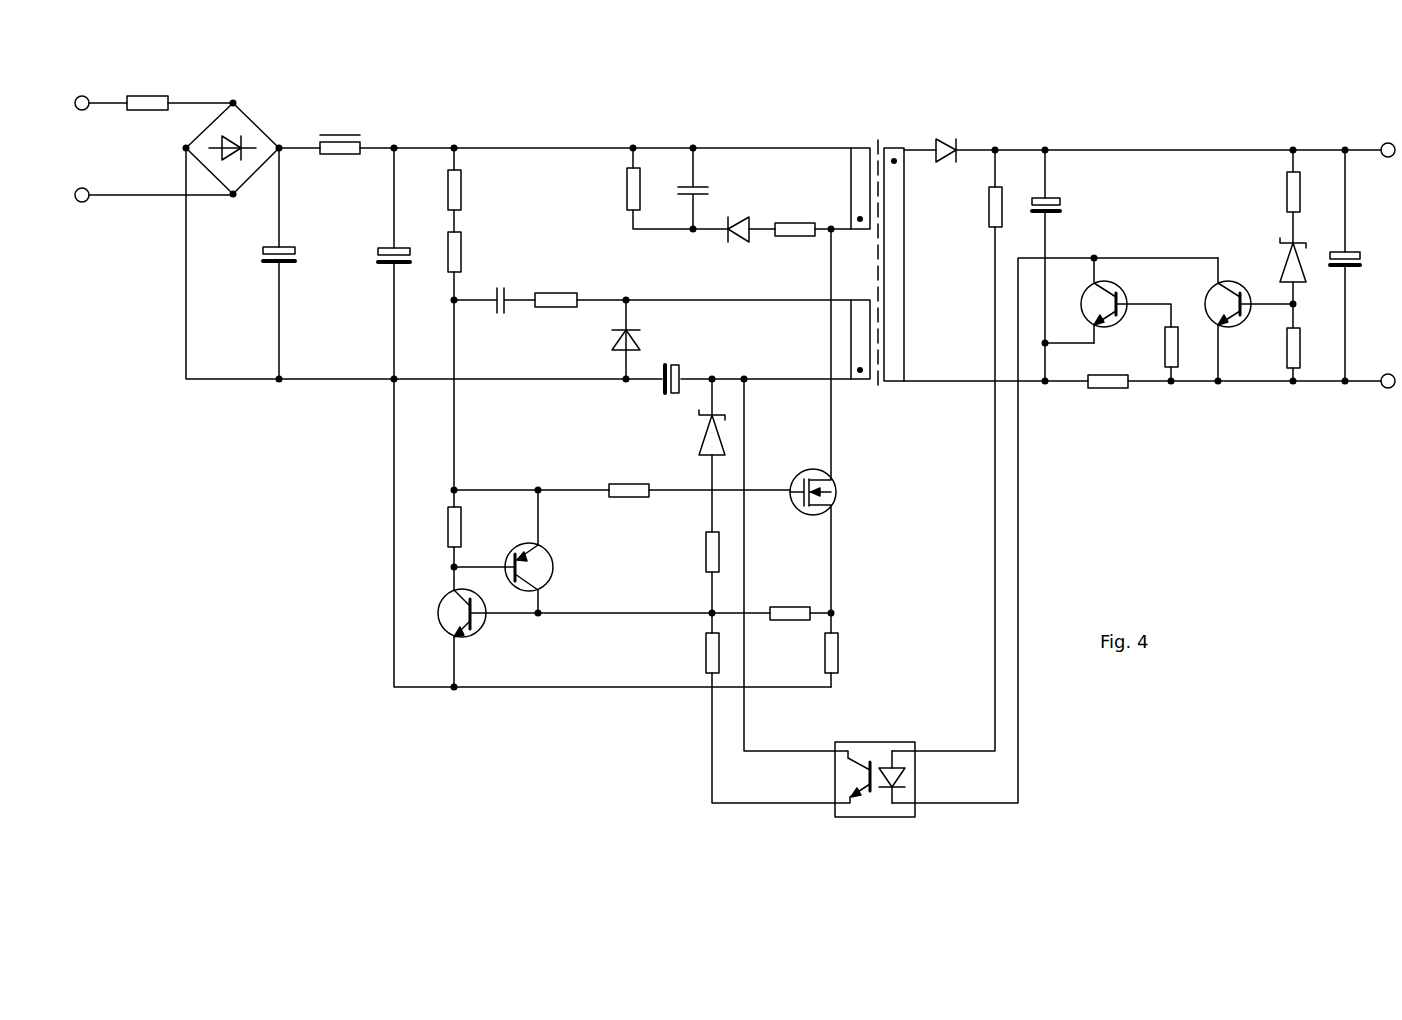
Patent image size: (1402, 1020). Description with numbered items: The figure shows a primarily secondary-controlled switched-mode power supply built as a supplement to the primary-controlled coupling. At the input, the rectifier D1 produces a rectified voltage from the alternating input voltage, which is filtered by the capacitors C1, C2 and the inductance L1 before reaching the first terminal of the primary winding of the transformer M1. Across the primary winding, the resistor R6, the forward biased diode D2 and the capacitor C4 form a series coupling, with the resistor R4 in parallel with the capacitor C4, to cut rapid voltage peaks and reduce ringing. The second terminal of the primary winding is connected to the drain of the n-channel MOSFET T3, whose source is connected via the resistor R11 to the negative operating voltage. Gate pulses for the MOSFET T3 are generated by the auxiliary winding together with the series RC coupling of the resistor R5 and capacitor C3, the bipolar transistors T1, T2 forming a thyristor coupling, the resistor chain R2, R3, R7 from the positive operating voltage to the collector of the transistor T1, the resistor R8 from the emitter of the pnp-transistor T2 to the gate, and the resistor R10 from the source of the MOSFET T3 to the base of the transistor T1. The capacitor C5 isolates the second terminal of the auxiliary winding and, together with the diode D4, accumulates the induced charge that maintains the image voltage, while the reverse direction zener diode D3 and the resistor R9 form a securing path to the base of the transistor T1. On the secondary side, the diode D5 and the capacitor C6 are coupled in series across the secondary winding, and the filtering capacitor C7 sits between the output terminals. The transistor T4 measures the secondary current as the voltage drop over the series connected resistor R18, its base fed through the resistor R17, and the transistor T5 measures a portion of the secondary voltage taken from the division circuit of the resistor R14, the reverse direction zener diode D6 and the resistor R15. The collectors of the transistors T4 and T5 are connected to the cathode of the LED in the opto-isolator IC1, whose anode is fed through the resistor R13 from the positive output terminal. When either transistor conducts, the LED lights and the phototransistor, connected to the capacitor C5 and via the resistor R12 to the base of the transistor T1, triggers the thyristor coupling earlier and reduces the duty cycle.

The rectifier D1 is at (236, 149).
The inductance L1 is at (340, 132).
The capacitor C1 is at (271, 263).
The capacitor C2 is at (386, 263).
The resistor R2 is at (469, 190).
The resistor R3 is at (469, 252).
The capacitor C3 is at (494, 313).
The resistor R5 is at (693, 312).
The diode D4 is at (610, 339).
The capacitor C5 is at (672, 365).
The resistor R4 is at (644, 188).
The capacitor C4 is at (694, 188).
The diode D2 is at (750, 216).
The resistor R6 is at (813, 215).
The transformer M1 is at (877, 252).
The diode D5 is at (945, 136).
The resistor R13 is at (947, 450).
The capacitor C6 is at (1054, 265).
The transistor T4 is at (1126, 300).
The resistor R17 is at (1150, 354).
The transistor T5 is at (1237, 319).
The resistor R14 is at (1272, 196).
The zener diode D6 is at (1280, 283).
The resistor R15 is at (1272, 354).
The filtering capacitor C7 is at (1359, 265).
The resistor R18 is at (1108, 394).
The resistor R8 is at (622, 478).
The resistor R7 is at (437, 540).
The pnp transistor T2 is at (514, 551).
The transistor T1 is at (591, 631).
The zener diode D3 is at (696, 455).
The resistor R9 is at (694, 582).
The resistor R12 is at (689, 653).
The resistor R10 is at (800, 600).
The resistor R11 is at (809, 650).
The n-channel MOSFET T3 is at (813, 421).
The opto-isolator IC1 is at (875, 765).